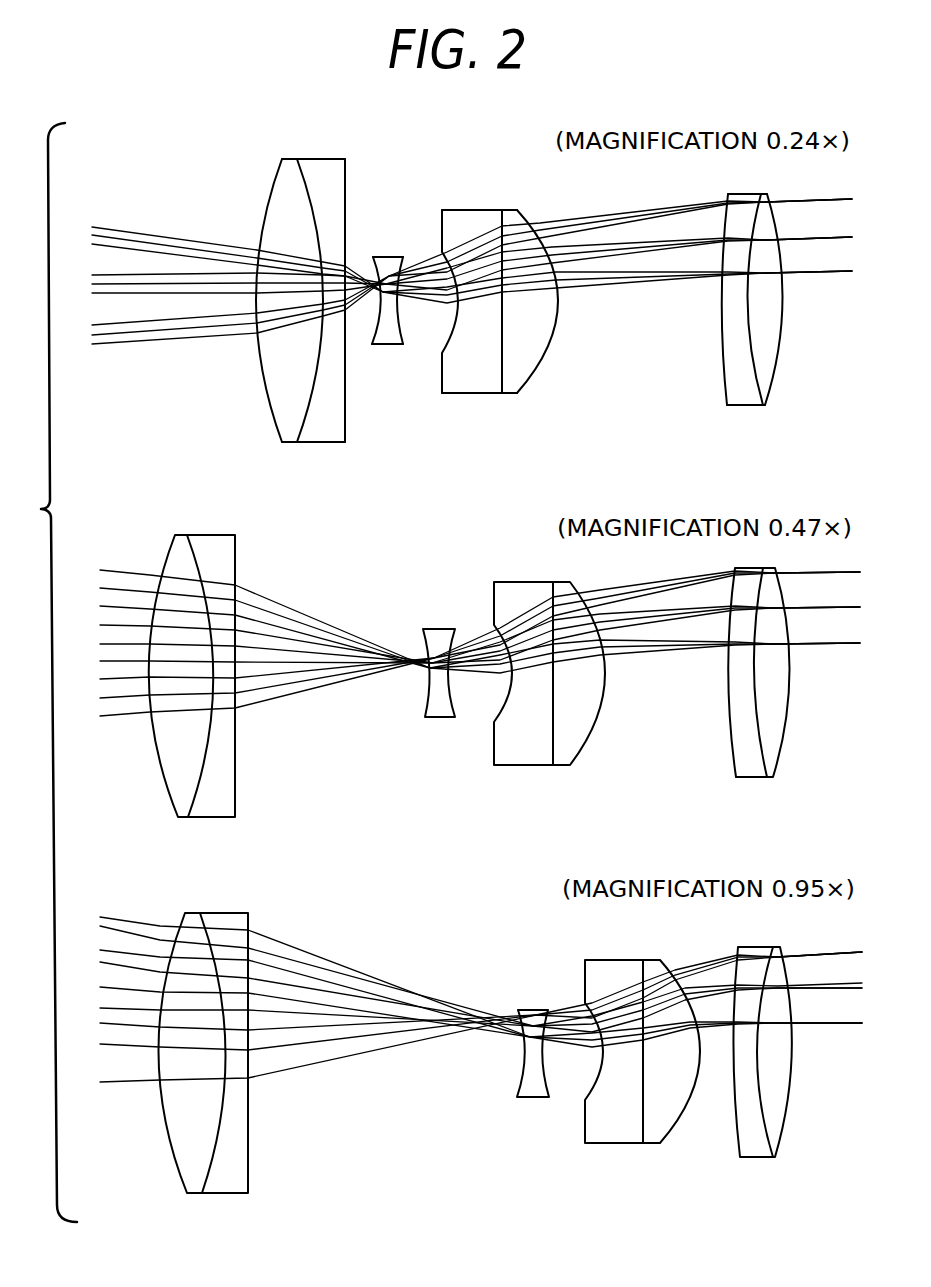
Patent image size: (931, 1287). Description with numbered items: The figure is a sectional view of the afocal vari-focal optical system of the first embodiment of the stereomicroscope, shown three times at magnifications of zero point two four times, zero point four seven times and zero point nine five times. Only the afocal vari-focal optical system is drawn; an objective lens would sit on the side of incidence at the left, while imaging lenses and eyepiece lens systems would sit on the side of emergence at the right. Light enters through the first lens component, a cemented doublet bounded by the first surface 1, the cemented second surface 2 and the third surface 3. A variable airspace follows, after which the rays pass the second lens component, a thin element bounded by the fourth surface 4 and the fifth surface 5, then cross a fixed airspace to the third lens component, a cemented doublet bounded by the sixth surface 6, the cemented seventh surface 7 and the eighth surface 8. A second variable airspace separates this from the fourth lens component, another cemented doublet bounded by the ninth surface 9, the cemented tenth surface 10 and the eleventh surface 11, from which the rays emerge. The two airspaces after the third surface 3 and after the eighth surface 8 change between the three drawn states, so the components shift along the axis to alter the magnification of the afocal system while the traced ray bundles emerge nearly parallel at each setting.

The radius of curvature r1 1 is at (267, 402).
The radius of curvature r2 2 is at (310, 403).
The radius of curvature r3 3 is at (352, 417).
The radius of curvature r4 4 is at (373, 327).
The radius of curvature r5 5 is at (403, 327).
The radius of curvature r6 6 is at (446, 338).
The radius of curvature r7 7 is at (498, 370).
The radius of curvature r8 8 is at (548, 357).
The radius of curvature r9 9 is at (723, 367).
The radius of curvature r10 10 is at (750, 373).
The radius of curvature r11 11 is at (777, 370).